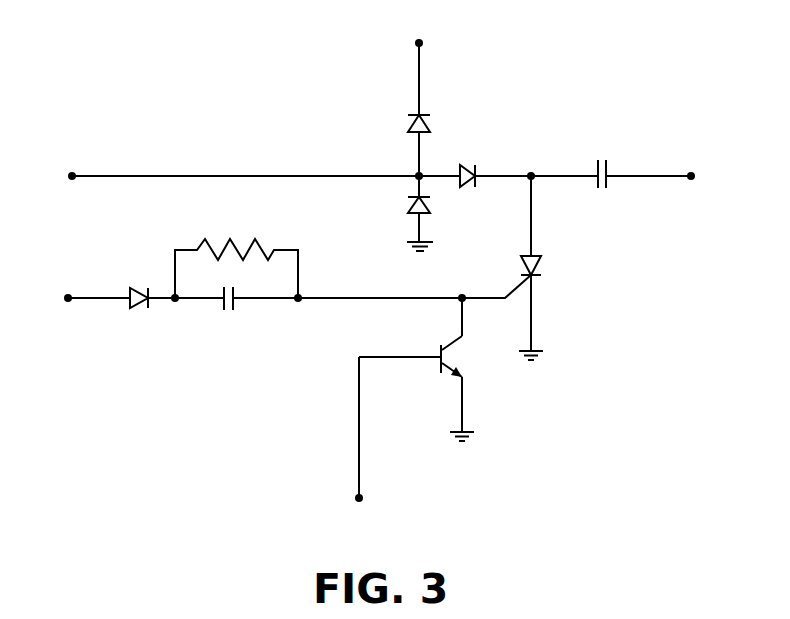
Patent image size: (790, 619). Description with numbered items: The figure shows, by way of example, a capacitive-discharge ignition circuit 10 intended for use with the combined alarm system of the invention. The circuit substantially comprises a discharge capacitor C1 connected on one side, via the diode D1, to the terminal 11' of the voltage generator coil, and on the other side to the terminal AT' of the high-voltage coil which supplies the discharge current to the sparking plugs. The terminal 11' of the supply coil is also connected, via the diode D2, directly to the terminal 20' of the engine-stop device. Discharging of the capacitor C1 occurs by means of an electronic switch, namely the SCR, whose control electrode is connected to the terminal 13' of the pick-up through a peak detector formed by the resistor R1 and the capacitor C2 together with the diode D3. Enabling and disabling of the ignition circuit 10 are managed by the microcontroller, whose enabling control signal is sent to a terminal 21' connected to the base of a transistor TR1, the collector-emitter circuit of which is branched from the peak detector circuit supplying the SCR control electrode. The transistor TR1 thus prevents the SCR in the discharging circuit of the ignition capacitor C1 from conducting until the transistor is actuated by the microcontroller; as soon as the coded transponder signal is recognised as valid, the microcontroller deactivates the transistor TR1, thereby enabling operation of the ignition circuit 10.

The ignition circuit 10 is at (247, 96).
The terminal of the voltage generator coil 11' is at (244, 186).
The terminal of the pick-up 13' is at (75, 299).
The terminal of the engine-stop device 20' is at (445, 69).
The terminal for the enabling control signal 21' is at (375, 446).
The terminal of the high-voltage coil AT' is at (692, 194).
The diode D1 is at (526, 161).
The diode D2 is at (396, 180).
The diode D3 is at (150, 282).
The discharge capacitor C1 is at (639, 158).
The peak detector capacitor C2 is at (318, 317).
The peak detector resistor R1 is at (236, 250).
The electronic switch SCR is at (533, 268).
The transistor TR1 is at (416, 367).